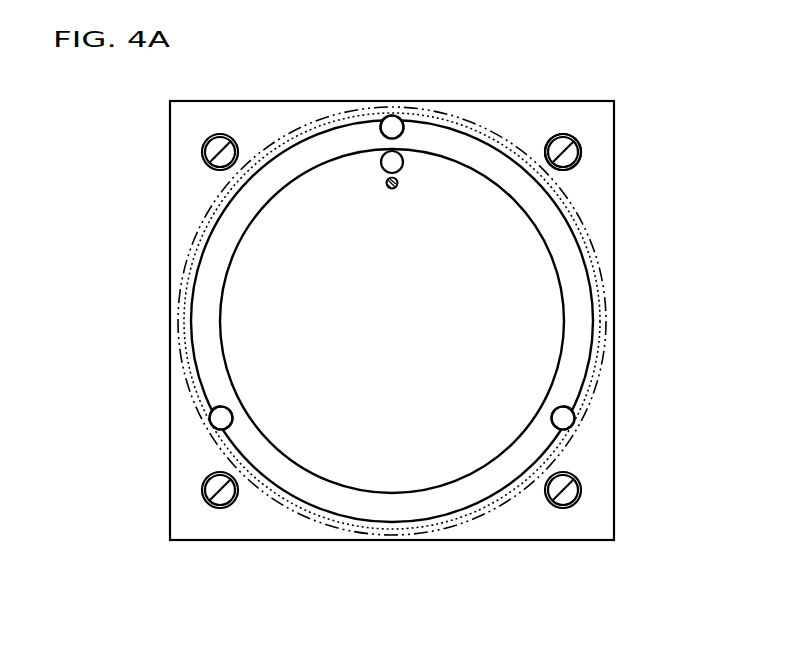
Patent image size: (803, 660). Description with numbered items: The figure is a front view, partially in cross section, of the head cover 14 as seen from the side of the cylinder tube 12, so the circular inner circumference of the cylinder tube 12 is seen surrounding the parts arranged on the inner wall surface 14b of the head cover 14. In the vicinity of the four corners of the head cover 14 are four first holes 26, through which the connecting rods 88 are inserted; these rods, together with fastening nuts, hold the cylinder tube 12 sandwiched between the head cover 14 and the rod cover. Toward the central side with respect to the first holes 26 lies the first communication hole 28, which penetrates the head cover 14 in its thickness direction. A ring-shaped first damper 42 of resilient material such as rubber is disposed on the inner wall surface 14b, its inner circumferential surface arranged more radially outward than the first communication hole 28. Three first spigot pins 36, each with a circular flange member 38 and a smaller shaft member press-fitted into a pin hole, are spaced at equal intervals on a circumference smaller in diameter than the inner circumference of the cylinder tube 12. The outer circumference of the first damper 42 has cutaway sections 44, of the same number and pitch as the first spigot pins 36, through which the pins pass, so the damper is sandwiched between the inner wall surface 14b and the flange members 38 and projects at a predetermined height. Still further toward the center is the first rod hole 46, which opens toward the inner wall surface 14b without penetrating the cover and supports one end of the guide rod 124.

The cylinder tube 12 is at (468, 125).
The head cover 14 is at (617, 272).
The inner wall surface 14b is at (198, 195).
The first hole 26 is at (580, 155).
The first communication hole 28 is at (382, 161).
The first spigot pin 36 is at (394, 120).
The flange member 38 is at (400, 131).
The first damper 42 is at (518, 212).
The cutaway section 44 is at (384, 122).
The first rod hole 46 is at (387, 188).
The connecting rod 88 is at (222, 150).
The guide rod 124 is at (396, 190).